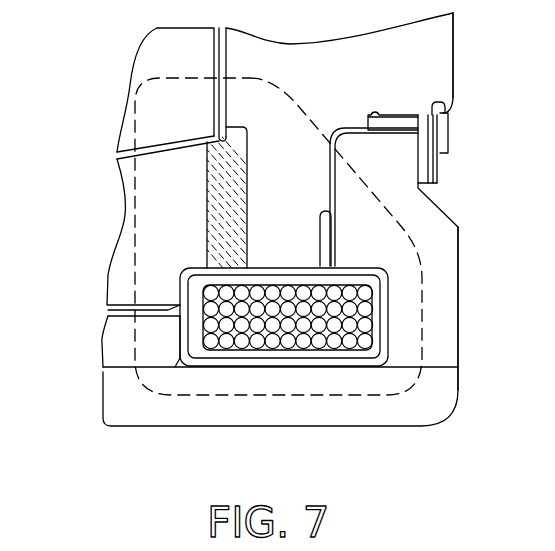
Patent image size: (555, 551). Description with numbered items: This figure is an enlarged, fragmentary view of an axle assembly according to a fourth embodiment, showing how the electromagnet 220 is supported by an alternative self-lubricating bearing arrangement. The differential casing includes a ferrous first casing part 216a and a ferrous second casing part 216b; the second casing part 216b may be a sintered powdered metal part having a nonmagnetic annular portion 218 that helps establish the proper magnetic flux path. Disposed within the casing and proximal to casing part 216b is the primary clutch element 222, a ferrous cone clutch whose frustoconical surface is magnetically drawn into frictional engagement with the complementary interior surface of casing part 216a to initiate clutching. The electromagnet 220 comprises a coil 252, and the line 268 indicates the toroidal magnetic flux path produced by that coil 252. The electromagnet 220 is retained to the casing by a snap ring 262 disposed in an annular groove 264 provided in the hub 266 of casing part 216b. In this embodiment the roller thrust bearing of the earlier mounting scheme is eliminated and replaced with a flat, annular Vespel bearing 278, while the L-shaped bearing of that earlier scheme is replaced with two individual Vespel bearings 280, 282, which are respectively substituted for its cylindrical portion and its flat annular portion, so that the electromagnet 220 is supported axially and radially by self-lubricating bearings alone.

The first casing part 216a is at (117, 272).
The second casing part 216b is at (442, 71).
The nonmagnetic annular portion 218 is at (240, 197).
The electromagnet 220 is at (447, 323).
The primary clutch element 222 is at (125, 147).
The coil 252 is at (315, 332).
The snap ring 262 is at (444, 137).
The annular groove 264 is at (442, 100).
The hub 266 is at (445, 40).
The line indicating toroidal magnetic flux path 268 is at (423, 290).
The flat annular bearing 278 is at (327, 242).
The bearing 280 is at (392, 124).
The bearing 282 is at (420, 157).